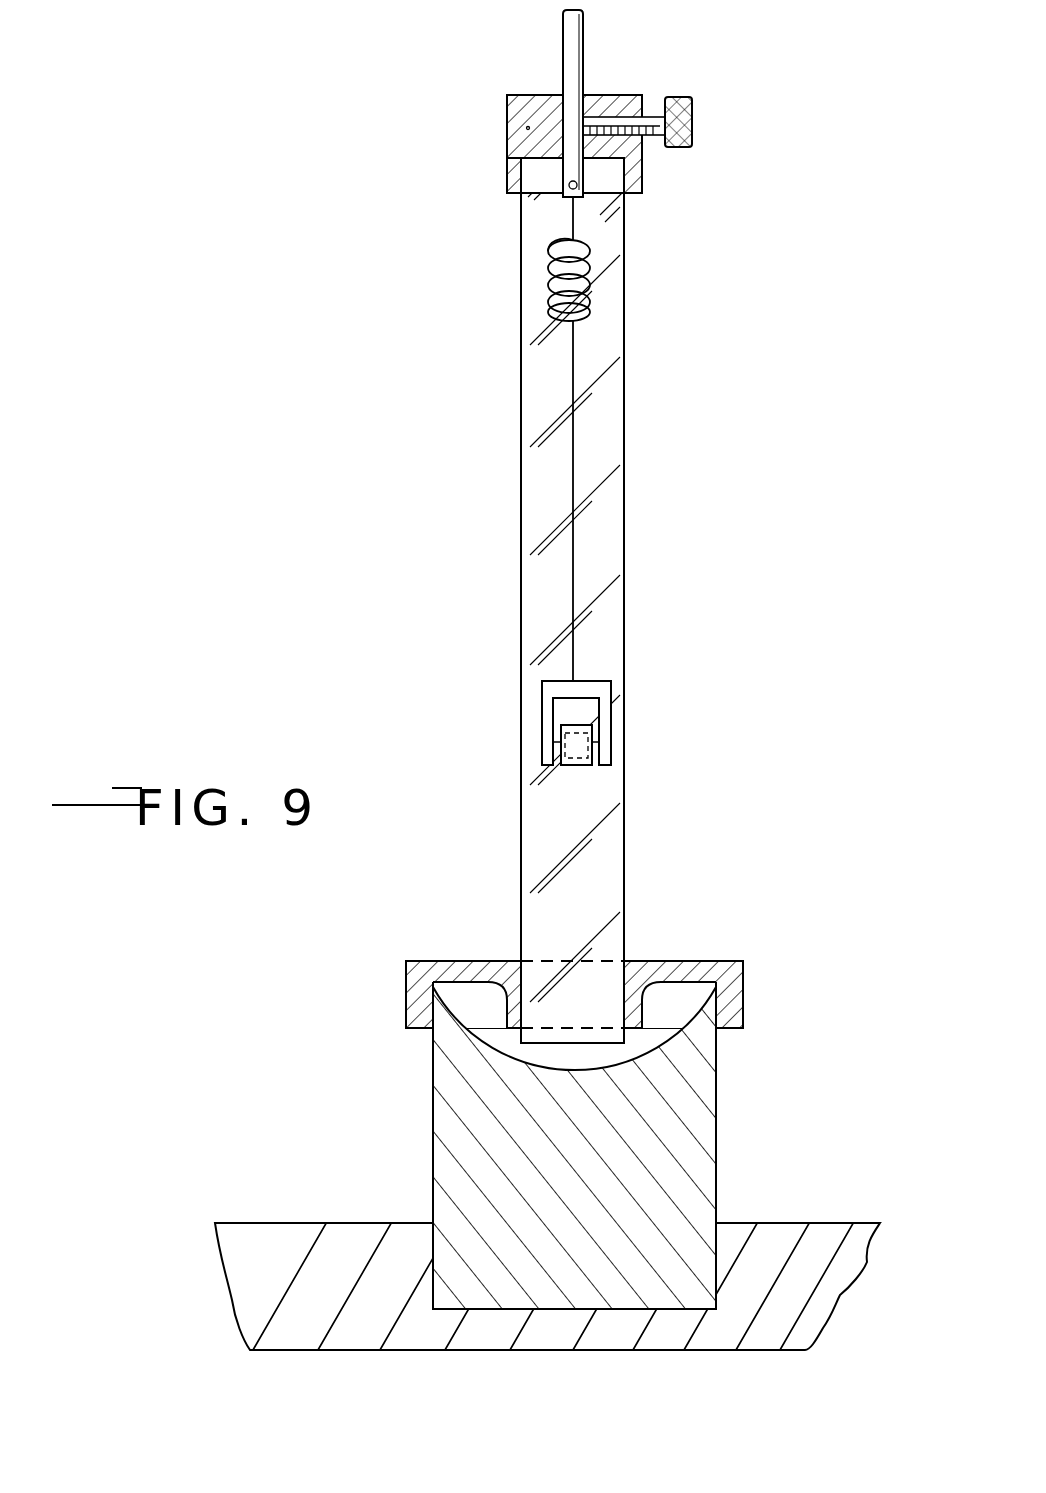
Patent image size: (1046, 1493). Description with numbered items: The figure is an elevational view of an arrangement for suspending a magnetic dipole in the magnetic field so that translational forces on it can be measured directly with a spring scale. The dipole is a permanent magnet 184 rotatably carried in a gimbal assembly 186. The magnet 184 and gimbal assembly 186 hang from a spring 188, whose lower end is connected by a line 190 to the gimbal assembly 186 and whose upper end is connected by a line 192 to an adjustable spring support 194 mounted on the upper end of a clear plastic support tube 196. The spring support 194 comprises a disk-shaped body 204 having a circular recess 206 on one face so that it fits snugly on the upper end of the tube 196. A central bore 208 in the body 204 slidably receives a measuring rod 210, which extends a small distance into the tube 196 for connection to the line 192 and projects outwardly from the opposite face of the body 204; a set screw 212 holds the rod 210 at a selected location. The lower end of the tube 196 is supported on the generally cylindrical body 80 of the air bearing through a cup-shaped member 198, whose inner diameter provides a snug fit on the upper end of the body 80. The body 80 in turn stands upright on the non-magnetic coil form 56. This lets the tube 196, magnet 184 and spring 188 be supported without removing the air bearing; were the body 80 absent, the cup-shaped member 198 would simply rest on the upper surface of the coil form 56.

The coil form 56 is at (312, 1237).
The cylindrical body 80 is at (428, 1082).
The cup-shaped member 198 is at (672, 950).
The support tube 196 is at (517, 432).
The adjustable spring support 194 is at (559, 105).
The disk-shaped body 204 is at (508, 146).
The circular recess 206 is at (507, 173).
The central bore 208 is at (525, 127).
The measuring rod 210 is at (563, 47).
The set screw 212 is at (692, 115).
The line 192 is at (575, 218).
The spring 188 is at (596, 277).
The line 190 is at (575, 477).
The gimbal assembly 186 is at (623, 683).
The permanent magnet 184 is at (592, 747).